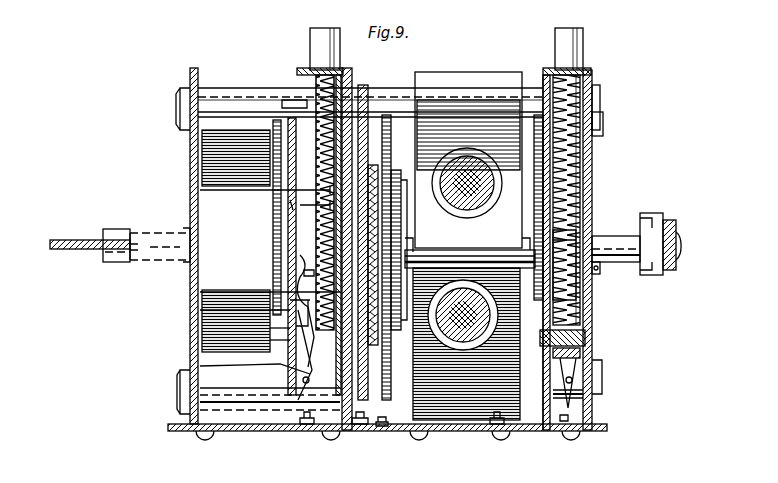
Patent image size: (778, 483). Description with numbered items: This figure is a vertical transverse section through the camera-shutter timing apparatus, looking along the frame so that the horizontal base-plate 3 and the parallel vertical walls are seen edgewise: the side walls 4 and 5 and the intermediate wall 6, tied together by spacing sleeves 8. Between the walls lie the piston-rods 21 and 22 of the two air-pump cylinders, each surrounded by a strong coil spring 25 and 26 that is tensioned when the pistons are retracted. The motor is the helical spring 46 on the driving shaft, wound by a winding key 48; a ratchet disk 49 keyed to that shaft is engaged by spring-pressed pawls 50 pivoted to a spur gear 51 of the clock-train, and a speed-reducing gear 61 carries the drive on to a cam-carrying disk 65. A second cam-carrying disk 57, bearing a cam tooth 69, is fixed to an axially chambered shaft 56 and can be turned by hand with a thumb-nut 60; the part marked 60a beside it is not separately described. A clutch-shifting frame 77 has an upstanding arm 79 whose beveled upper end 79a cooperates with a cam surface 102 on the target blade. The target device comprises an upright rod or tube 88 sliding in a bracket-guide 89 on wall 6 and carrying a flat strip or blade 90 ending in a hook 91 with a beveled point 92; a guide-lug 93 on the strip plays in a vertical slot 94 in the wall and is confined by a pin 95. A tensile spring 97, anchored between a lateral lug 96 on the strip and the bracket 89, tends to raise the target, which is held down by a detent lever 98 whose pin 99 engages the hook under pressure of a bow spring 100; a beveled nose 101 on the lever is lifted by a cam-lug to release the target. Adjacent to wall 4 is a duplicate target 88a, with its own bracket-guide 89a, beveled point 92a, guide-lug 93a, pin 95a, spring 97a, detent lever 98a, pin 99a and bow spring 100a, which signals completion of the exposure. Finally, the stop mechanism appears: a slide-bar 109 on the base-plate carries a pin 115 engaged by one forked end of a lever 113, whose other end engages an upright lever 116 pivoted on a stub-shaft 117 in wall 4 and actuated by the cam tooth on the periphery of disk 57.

The base-plate 3 is at (372, 433).
The side wall 4 is at (590, 72).
The side wall 5 is at (194, 68).
The intermediate wall 6 is at (347, 70).
The spacing sleeves 8 is at (234, 100).
The piston-rod 21 is at (472, 168).
The piston-rod 22 is at (480, 320).
The coil spring 25 is at (538, 118).
The coil spring 26 is at (440, 318).
The helical spring 46 is at (208, 155).
The winding key 48 is at (72, 240).
The ratchet disk 49 is at (290, 162).
The spring-pressed pawls 50 is at (304, 272).
The spur gear 51 is at (286, 100).
The axially chambered shaft 56 is at (500, 256).
The cam-carrying disk 57 is at (600, 96).
The thumb-nut 60 is at (672, 225).
The knob shaft 60a is at (650, 222).
The speed-reducing gear 61 is at (364, 88).
The cam-carrying disk 65 is at (386, 120).
The cam-shaped projection 69 is at (603, 122).
The clutch-shifting frame 77 is at (305, 424).
The upstanding arm 79 is at (300, 302).
The beveled upper end 79a is at (300, 262).
The upright rod or tube 88 is at (312, 38).
The target 88a is at (558, 38).
The bracket-guide 89 is at (304, 68).
The bracket-guide 89a is at (548, 68).
The flat strip or blade 90 is at (270, 326).
The hook 91 is at (185, 372).
The beveled point 92 is at (300, 396).
The beveled point 92a is at (592, 392).
The guide-lug 93 is at (200, 292).
The guide-lug 93a is at (600, 280).
The vertical slot 94 is at (300, 190).
The pin 95 is at (396, 262).
The pin 95a is at (600, 274).
The lateral lug 96 is at (215, 310).
The tensile spring 97 is at (316, 92).
The tensile spring 97a is at (578, 236).
The detent lever 98 is at (270, 340).
The detent lever 98a is at (580, 354).
The pin 99 is at (200, 366).
The pin 99a is at (575, 364).
The bow spring 100 is at (300, 206).
The bow spring 100a is at (590, 205).
The nose 101 is at (302, 286).
The cam surface 102 is at (432, 150).
The slide-bar 109 is at (362, 432).
The lever 113 is at (498, 432).
The pin 115 is at (384, 423).
The upright lever 116 is at (602, 396).
The stub-shaft 117 is at (586, 338).